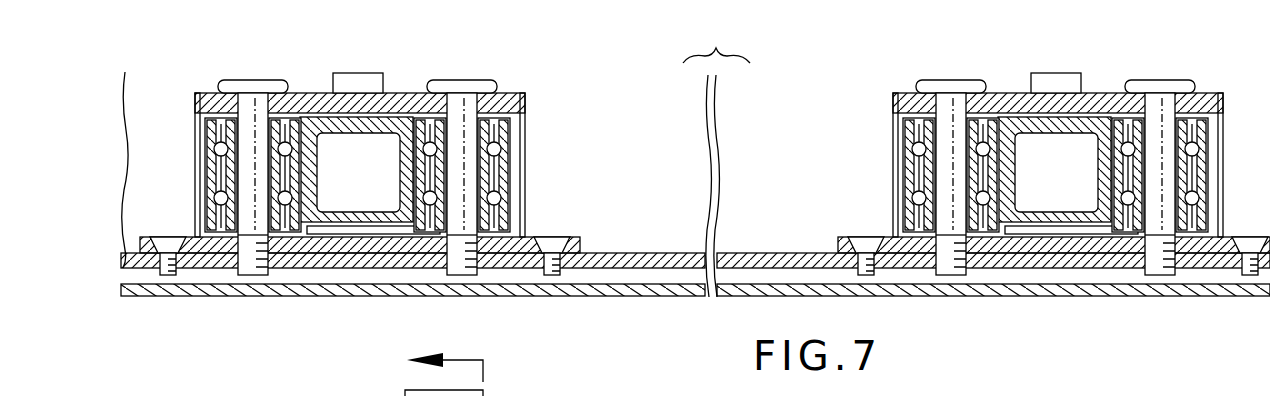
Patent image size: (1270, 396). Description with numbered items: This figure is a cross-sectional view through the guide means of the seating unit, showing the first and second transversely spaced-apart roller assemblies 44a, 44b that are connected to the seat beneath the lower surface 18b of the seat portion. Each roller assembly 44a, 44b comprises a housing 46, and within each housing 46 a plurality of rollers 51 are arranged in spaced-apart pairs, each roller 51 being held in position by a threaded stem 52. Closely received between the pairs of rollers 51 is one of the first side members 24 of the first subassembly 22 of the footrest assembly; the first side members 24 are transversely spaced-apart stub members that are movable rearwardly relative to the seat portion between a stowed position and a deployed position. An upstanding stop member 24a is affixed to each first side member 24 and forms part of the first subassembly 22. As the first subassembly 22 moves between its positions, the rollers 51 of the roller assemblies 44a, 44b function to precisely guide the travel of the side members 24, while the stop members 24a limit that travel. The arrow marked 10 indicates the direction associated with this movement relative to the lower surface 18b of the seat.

The direction of motion 10 is at (469, 371).
The lower surface 18b is at (653, 296).
The first subassembly 22 is at (391, 120).
The first side members 24 is at (400, 173).
The stop members 24a is at (357, 84).
The first roller assembly 44a is at (538, 118).
The second roller assembly 44b is at (882, 126).
The housing 46 is at (306, 102).
The rollers 51 is at (210, 178).
The threaded stem 52 is at (234, 87).